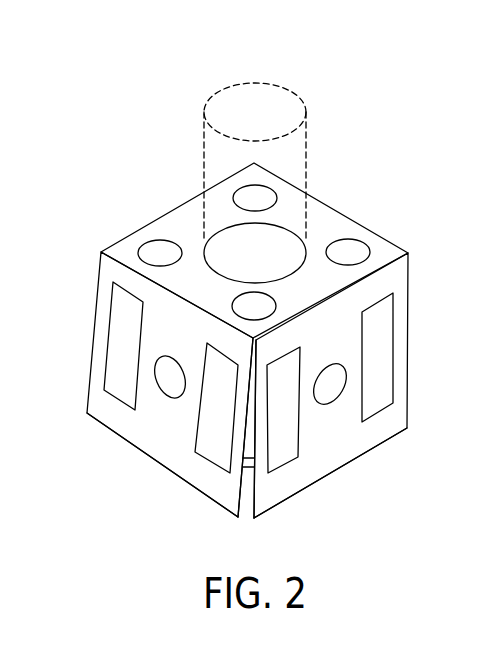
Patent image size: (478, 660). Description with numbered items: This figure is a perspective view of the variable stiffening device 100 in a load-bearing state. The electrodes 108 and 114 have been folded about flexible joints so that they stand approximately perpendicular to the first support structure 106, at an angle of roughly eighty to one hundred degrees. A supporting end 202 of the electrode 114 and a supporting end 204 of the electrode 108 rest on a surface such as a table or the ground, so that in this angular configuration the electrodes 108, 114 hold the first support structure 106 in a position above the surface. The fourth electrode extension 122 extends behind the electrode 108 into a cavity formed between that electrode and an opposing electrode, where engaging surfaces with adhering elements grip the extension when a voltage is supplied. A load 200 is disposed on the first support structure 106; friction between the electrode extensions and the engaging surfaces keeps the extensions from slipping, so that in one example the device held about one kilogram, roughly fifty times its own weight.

The variable stiffening device 100 is at (99, 95).
The first support structure 106 is at (342, 227).
The electrode 108 is at (333, 462).
The electrode 114 is at (162, 450).
The fourth electrode extension 122 is at (250, 467).
The load 200 is at (203, 160).
The supporting end 202 is at (107, 430).
The supporting end 204 is at (387, 443).